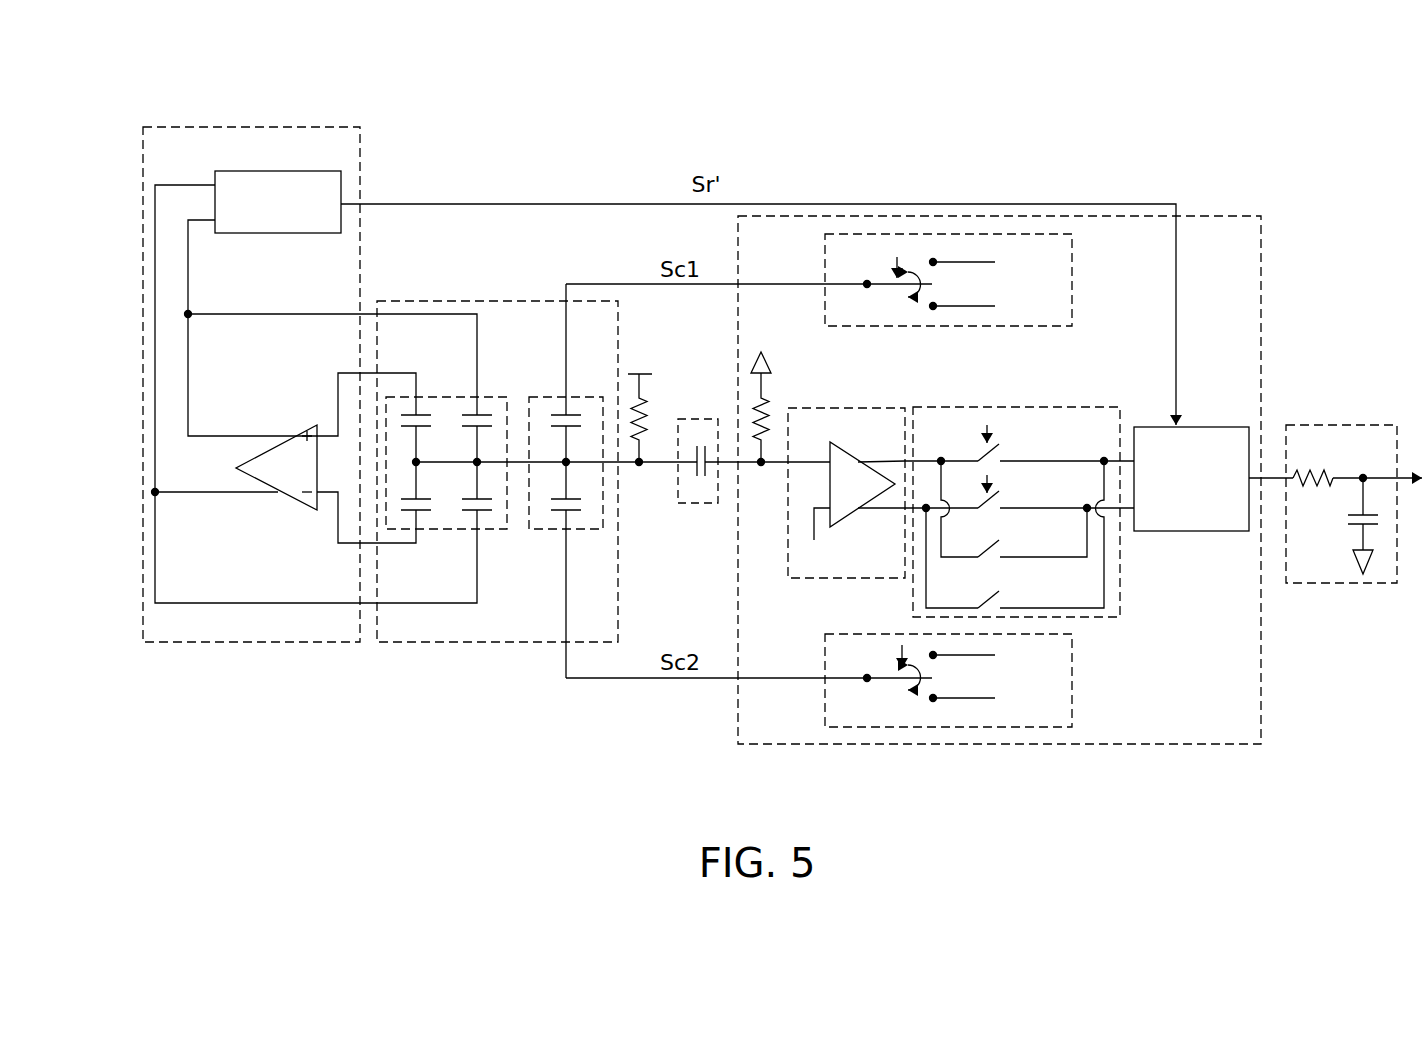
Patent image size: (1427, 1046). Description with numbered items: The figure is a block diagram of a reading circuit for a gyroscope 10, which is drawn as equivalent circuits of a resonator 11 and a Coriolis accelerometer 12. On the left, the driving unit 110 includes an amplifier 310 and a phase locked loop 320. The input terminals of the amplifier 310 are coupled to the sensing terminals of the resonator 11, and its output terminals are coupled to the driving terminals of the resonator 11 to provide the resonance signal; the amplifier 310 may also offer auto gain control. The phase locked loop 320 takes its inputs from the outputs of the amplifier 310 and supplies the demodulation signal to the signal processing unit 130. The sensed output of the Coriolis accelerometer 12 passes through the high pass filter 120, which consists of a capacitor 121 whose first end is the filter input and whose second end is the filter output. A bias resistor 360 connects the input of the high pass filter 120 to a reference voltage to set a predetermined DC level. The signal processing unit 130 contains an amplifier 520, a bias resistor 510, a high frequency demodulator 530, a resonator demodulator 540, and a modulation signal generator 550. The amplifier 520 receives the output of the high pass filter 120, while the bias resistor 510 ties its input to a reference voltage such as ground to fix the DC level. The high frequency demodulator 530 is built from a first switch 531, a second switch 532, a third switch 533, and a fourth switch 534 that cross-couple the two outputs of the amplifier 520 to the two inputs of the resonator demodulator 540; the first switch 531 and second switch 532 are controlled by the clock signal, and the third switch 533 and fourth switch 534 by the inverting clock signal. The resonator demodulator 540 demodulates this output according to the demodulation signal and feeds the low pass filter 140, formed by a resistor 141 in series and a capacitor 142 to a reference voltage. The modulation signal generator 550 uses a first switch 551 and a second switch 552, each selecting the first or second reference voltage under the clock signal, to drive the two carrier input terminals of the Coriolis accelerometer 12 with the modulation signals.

The gyroscope 10 is at (492, 644).
The resonator 11 is at (450, 531).
The Coriolis accelerometer 12 is at (595, 531).
The driving unit 110 is at (253, 644).
The high pass filter 120 is at (701, 505).
The capacitor 121 is at (701, 440).
The signal processing unit 130 is at (1160, 746).
The low pass filter 140 is at (1352, 423).
The resistor 141 is at (1325, 467).
The capacitor 142 is at (1343, 520).
The amplifier 310 is at (304, 430).
The phase locked loop 320 is at (272, 170).
The bias resistor 360 is at (660, 440).
The bias resistor 510 is at (778, 440).
The amplifier 520 is at (840, 406).
The high frequency demodulator 530 is at (997, 405).
The first switch 531 is at (1003, 452).
The second switch 532 is at (1003, 502).
The third switch 533 is at (1003, 550).
The fourth switch 534 is at (1003, 600).
The resonator demodulator 540 is at (1175, 533).
The modulation signal generator 550 is at (1072, 280).
The first switch 551 is at (900, 295).
The second switch 552 is at (900, 690).